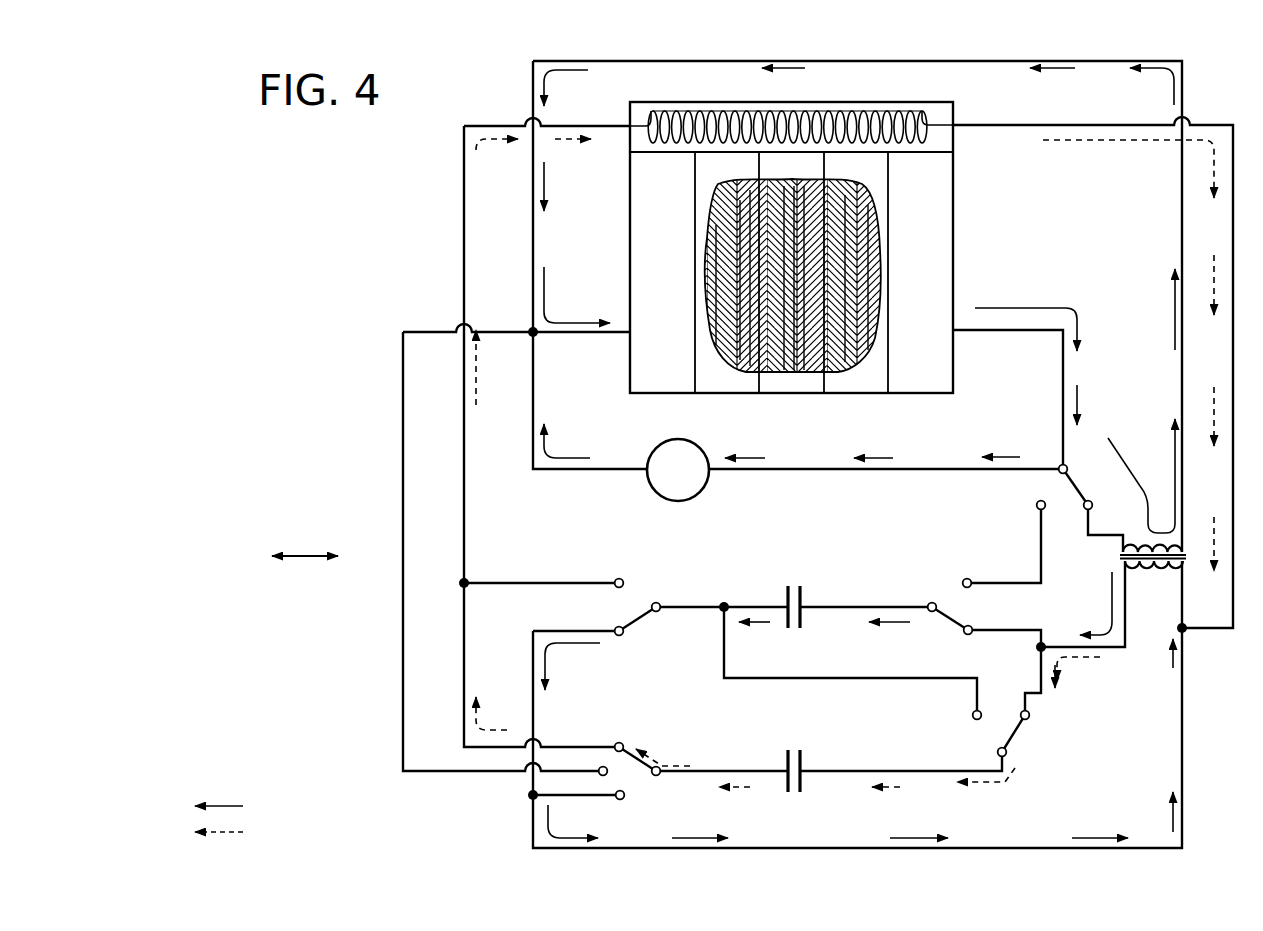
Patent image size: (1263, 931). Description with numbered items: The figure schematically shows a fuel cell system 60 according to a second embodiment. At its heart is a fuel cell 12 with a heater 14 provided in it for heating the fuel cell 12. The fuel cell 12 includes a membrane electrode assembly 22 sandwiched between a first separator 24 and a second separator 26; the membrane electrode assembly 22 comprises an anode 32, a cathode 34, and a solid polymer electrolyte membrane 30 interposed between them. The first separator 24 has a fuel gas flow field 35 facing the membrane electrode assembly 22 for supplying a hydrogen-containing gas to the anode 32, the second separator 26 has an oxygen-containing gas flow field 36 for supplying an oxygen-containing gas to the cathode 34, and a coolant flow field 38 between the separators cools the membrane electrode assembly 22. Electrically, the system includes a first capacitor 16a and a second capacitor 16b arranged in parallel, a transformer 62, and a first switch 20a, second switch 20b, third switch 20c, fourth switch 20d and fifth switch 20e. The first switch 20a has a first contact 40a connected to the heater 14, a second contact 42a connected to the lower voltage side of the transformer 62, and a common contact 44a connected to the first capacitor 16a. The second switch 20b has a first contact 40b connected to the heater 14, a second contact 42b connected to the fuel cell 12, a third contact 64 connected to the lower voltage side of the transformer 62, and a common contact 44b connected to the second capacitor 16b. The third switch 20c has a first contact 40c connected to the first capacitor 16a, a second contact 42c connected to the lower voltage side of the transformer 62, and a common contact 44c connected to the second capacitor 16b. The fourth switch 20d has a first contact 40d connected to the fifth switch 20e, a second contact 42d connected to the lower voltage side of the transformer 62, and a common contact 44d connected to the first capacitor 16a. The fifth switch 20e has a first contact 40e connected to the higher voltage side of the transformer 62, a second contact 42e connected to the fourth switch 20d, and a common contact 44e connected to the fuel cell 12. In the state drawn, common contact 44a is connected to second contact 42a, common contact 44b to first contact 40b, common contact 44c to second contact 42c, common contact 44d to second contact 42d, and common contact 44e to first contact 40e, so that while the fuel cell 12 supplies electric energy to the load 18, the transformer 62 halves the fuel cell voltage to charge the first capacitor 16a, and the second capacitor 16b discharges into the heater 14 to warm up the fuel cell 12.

The fuel cell 12 is at (957, 222).
The heater 14 is at (696, 106).
The first capacitor 16a is at (794, 631).
The second capacitor 16b is at (794, 794).
The load 18 is at (662, 499).
The first switch 20a is at (641, 586).
The second switch 20b is at (655, 736).
The third switch 20c is at (986, 728).
The fourth switch 20d is at (953, 585).
The fifth switch 20e is at (1058, 506).
The membrane electrode assembly 22 is at (834, 430).
The first separator 24 is at (714, 302).
The second separator 26 is at (748, 362).
The solid polymer electrolyte membrane 30 is at (794, 373).
The anode 32 is at (787, 373).
The cathode 34 is at (801, 373).
The fuel gas flow field 35 is at (840, 237).
The oxygen-containing gas flow field 36 is at (864, 260).
The coolant flow field 38 is at (756, 238).
The first contact 40a is at (619, 578).
The first contact 40b is at (619, 742).
The first contact 40c is at (972, 715).
The first contact 40d is at (967, 578).
The first contact 40e is at (1093, 505).
The second contact 42a is at (620, 636).
The second contact 42b is at (602, 766).
The second contact 42c is at (1030, 715).
The second contact 42d is at (968, 635).
The second contact 42e is at (1037, 505).
The common contact 44a is at (656, 612).
The common contact 44b is at (656, 776).
The common contact 44c is at (1007, 752).
The common contact 44d is at (932, 612).
The common contact 44e is at (1068, 469).
The fuel cell system 60 is at (373, 151).
The transformer 62 is at (1155, 574).
The third contact 64 is at (620, 800).